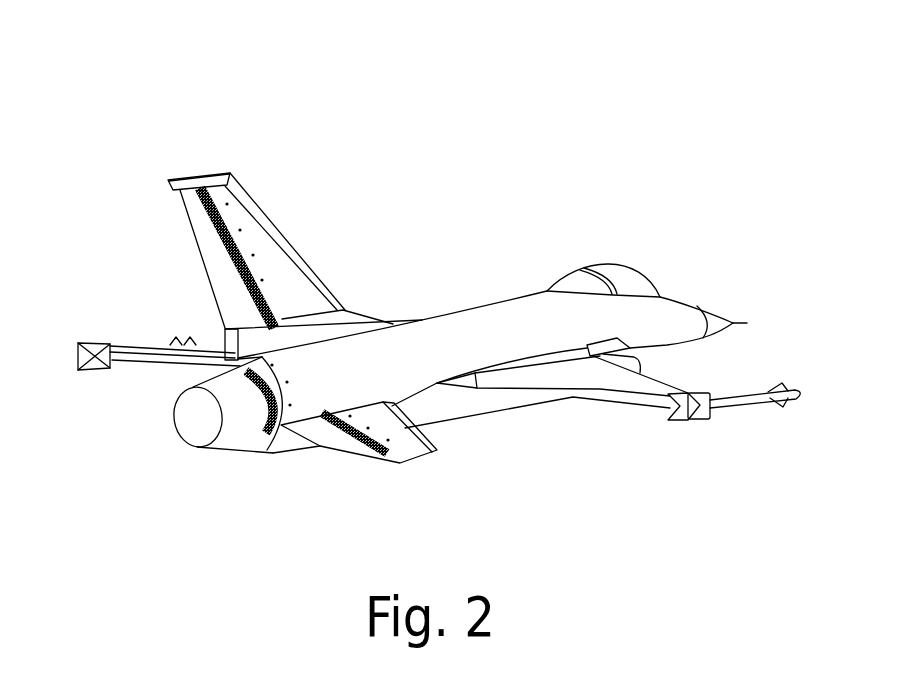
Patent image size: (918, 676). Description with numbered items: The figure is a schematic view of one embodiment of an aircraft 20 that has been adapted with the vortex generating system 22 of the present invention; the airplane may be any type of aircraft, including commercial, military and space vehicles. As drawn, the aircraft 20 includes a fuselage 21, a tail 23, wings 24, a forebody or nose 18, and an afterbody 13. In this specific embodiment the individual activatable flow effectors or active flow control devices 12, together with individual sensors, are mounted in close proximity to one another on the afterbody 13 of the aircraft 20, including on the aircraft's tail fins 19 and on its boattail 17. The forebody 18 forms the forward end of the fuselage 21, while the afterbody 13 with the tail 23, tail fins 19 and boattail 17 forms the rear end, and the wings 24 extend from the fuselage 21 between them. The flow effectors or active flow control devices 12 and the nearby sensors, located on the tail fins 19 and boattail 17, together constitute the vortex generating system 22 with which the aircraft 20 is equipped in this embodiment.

The activatable flow effectors or active flow control devices 12 is at (230, 258).
The afterbody 13 is at (314, 396).
The boattail 17 is at (235, 437).
The forebody (nose) 18 is at (670, 308).
The tail fins 19 is at (238, 212).
The aircraft 20 is at (463, 330).
The fuselage 21 is at (430, 367).
The vortex generating system 22 is at (272, 368).
The tail 23 is at (203, 182).
The wings 24 is at (562, 375).